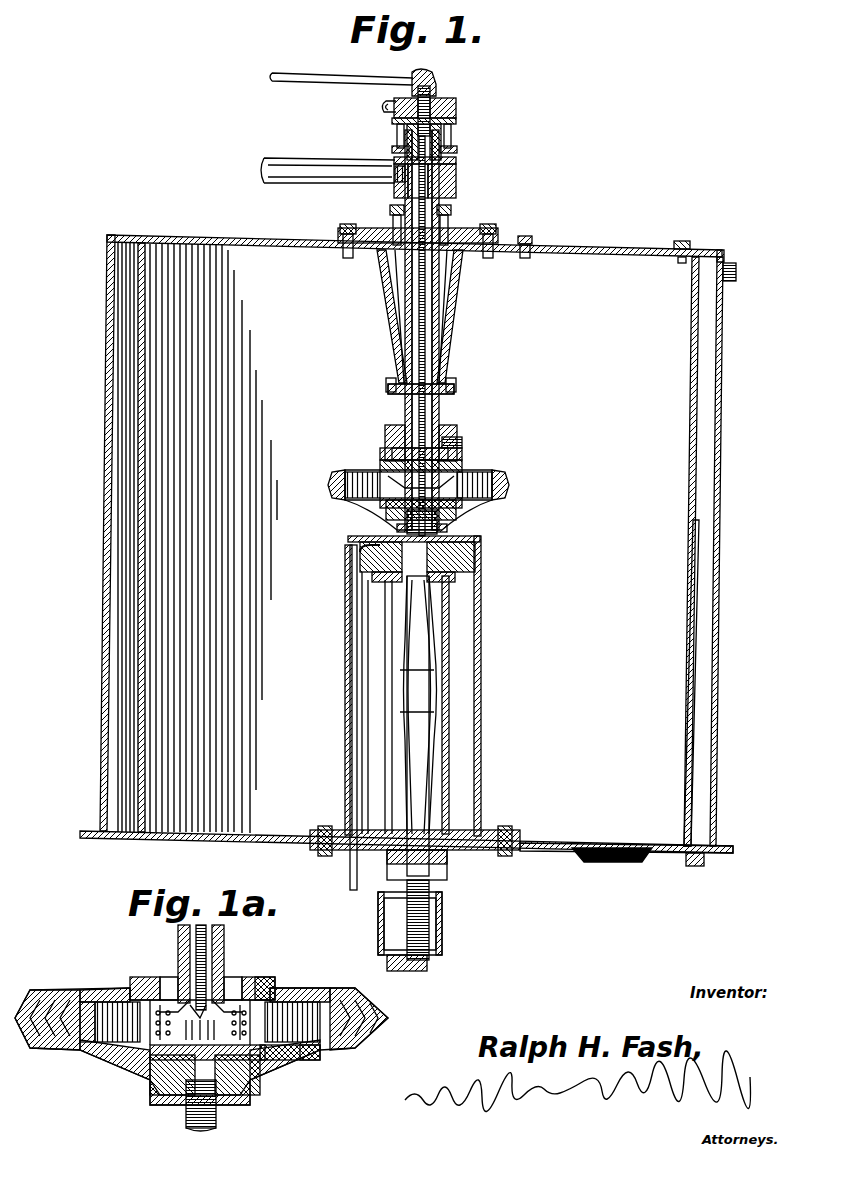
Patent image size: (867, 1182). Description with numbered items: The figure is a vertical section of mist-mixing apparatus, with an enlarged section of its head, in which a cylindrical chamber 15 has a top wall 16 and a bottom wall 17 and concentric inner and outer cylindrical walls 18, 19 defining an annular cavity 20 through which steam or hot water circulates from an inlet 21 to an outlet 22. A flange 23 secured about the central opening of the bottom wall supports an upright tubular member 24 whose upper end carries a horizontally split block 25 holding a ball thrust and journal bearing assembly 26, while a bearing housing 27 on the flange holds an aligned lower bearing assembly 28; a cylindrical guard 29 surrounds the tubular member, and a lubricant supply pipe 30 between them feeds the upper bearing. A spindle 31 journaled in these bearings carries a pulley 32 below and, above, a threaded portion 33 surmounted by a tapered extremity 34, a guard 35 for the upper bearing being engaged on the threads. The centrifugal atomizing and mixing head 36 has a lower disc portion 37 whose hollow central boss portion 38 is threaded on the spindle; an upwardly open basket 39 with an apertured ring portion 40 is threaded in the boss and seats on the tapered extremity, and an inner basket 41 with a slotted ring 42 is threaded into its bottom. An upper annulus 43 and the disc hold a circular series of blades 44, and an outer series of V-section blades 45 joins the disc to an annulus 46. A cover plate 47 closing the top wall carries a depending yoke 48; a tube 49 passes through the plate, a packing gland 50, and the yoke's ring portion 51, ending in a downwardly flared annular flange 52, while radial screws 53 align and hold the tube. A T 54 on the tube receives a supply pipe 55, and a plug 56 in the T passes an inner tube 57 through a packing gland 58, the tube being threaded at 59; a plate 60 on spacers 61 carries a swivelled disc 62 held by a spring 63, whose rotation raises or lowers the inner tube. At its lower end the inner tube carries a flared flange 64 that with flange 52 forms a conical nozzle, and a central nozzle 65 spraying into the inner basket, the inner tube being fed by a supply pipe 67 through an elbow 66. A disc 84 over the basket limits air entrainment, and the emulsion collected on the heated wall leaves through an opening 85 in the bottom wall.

In FIG. 1, the cylindrical chamber 15 is at (232, 846).
In FIG. 1, the top wall 16 is at (282, 240).
In FIG. 1, the bottom wall 17 is at (580, 845).
In FIG. 1, the inner cylindrical wall 18 is at (697, 432).
In FIG. 1, the outer cylindrical wall 19 is at (724, 340).
In FIG. 1, the annular cavity 20 is at (700, 549).
In FIG. 1, the inlet 21 is at (737, 272).
In FIG. 1, the outlet 22 is at (695, 866).
In FIG. 1, the flange 23 is at (480, 846).
In FIG. 1, the upright tubular member 24 is at (450, 632).
In FIG. 1, the horizontally split block 25 is at (456, 576).
In FIG. 1, the ball thrust and journal bearing assembly 26 is at (480, 540).
In FIG. 1, the bearing housing 27 is at (447, 862).
In FIG. 1, the ball thrust and journal bearing assembly 28 is at (442, 875).
In FIG. 1, the cylindrical guard 29 is at (482, 689).
In FIG. 1, the lubricant supply pipe 30 is at (350, 858).
In FIG. 1, the spindle 31 is at (440, 800).
In FIG. 1, the pulley 32 is at (443, 936).
In FIG. 1, the threaded portion 33 is at (398, 530).
In FIG. 1A, the threaded portion 33 is at (186, 1115).
In FIG. 1, the tapered extremity 34 is at (403, 500).
In FIG. 1A, the tapered extremity 34 is at (175, 1060).
In FIG. 1, the guard 35 is at (440, 530).
In FIG. 1, the centrifugal atomizing and mixing head 36 is at (512, 462).
In FIG. 1A, the centrifugal atomizing and mixing head 36 is at (252, 1098).
In FIG. 1, the lower disc portion 37 is at (338, 492).
In FIG. 1A, the lower disc portion 37 is at (75, 1060).
In FIG. 1, the central boss portion 38 is at (386, 514).
In FIG. 1A, the central boss portion 38 is at (150, 1090).
In FIG. 1, the basket 39 is at (445, 458).
In FIG. 1A, the basket 39 is at (265, 990).
In FIG. 1A, the ring portion 40 is at (290, 1010).
In FIG. 1, the basket 41 is at (440, 506).
In FIG. 1A, the basket 41 is at (282, 1062).
In FIG. 1A, the ring 42 is at (312, 1062).
In FIG. 1, the upper annulus 43 is at (375, 462).
In FIG. 1A, the upper annulus 43 is at (275, 1010).
In FIG. 1, the blades 44 is at (352, 472).
In FIG. 1A, the blades 44 is at (318, 1025).
In FIG. 1, the blades 45 is at (510, 489).
In FIG. 1A, the blades 45 is at (372, 1040).
In FIG. 1, the annulus 46 is at (478, 470).
In FIG. 1A, the annulus 46 is at (345, 990).
In FIG. 1, the cover plate 47 is at (462, 236).
In FIG. 1, the yoke 48 is at (455, 272).
In FIG. 1, the tube 49 is at (436, 292).
In FIG. 1A, the tube 49 is at (178, 943).
In FIG. 1, the packing gland 50 is at (392, 225).
In FIG. 1, the ring portion 51 is at (454, 392).
In FIG. 1A, the flared annular flange 52 is at (166, 980).
In FIG. 1, the radial screws 53 is at (388, 385).
In FIG. 1, the T 54 is at (458, 175).
In FIG. 1, the supply pipe 55 is at (320, 166).
In FIG. 1, the plug 56 is at (447, 160).
In FIG. 1, the tube 57 is at (440, 182).
In FIG. 1A, the tube 57 is at (224, 940).
In FIG. 1, the packing gland 58 is at (444, 140).
In FIG. 1, the threads 59 is at (432, 95).
In FIG. 1, the plate 60 is at (392, 121).
In FIG. 1, the spacers 61 is at (397, 136).
In FIG. 1, the disc 62 is at (457, 103).
In FIG. 1, the spring 63 is at (386, 106).
In FIG. 1A, the flared flange 64 is at (210, 1010).
In FIG. 1A, the central nozzle 65 is at (220, 1005).
In FIG. 1, the elbow 66 is at (428, 72).
In FIG. 1, the supply pipe 67 is at (338, 76).
In FIG. 1, the disc 84 is at (393, 425).
In FIG. 1, the opening 85 is at (612, 862).